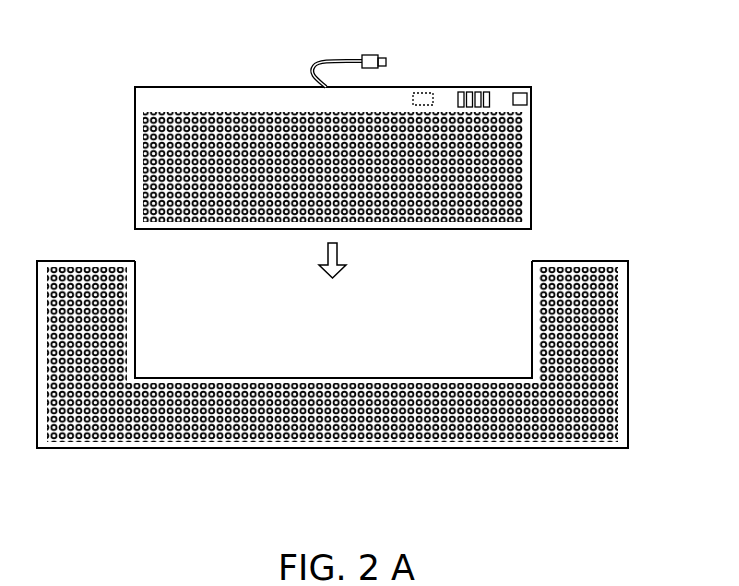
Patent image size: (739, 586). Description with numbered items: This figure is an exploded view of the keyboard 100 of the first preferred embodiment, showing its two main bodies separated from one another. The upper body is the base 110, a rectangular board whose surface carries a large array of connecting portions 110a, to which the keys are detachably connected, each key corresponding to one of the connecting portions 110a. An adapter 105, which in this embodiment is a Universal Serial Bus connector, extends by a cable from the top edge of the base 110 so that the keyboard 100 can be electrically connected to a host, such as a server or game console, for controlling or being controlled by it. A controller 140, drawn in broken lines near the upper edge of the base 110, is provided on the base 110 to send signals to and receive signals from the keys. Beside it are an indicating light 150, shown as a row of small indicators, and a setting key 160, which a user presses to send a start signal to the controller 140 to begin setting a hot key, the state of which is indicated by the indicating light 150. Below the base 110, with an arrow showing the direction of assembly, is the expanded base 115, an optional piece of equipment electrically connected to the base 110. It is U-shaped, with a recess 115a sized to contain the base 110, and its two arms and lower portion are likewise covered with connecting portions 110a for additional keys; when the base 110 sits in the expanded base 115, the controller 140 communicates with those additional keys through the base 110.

The keyboard 100 is at (117, 48).
The adapter 105 is at (369, 54).
The base 110 is at (532, 96).
The connecting portions 110a is at (456, 110).
The expanded base 115 is at (628, 353).
The recess of second module 115a is at (508, 278).
The controller 140 is at (423, 90).
The indicating light 150 is at (478, 89).
The setting key 160 is at (517, 91).